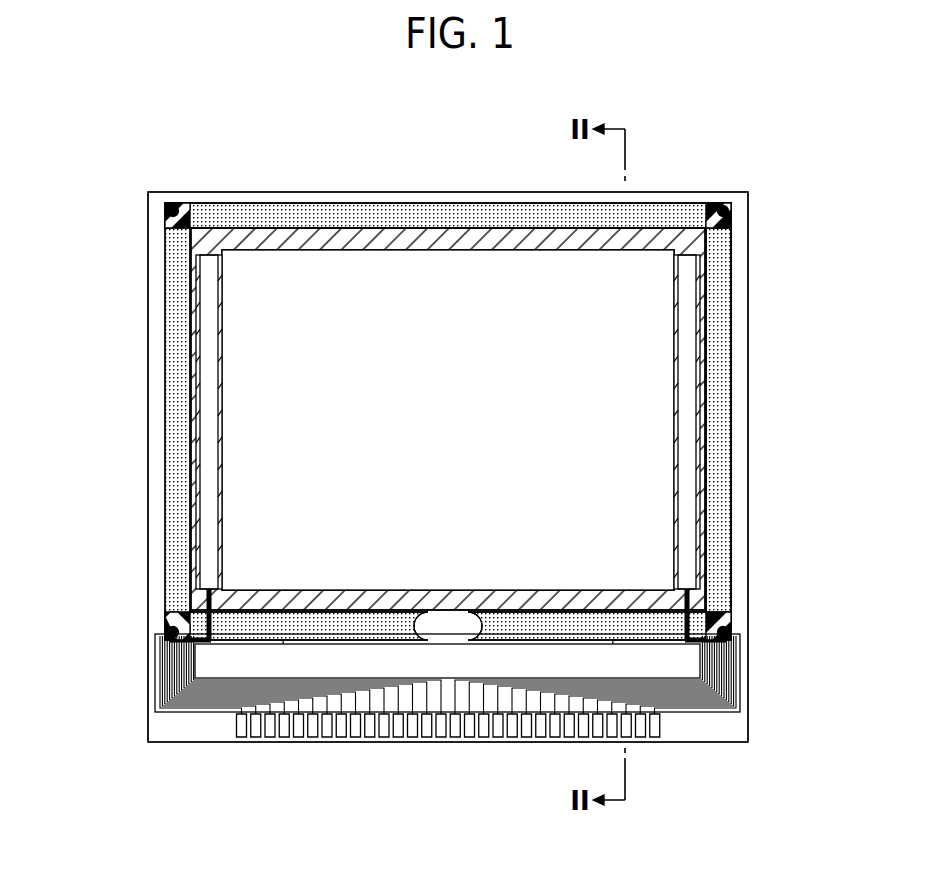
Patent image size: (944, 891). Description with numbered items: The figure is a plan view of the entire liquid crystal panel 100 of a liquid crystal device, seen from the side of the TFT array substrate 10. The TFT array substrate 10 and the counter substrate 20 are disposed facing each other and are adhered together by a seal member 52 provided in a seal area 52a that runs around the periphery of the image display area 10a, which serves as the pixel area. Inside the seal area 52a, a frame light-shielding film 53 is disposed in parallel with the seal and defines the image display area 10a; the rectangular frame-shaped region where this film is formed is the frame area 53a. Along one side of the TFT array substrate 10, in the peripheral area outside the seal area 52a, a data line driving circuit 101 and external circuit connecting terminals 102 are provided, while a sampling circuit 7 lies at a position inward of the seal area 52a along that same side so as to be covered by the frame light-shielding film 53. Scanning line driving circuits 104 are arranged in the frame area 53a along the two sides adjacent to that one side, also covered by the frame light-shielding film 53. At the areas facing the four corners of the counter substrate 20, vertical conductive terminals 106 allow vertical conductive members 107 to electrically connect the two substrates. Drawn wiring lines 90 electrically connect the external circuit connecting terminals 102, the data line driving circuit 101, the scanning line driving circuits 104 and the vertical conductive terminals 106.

The liquid crystal panel 100 is at (686, 130).
The TFT array substrate 10 is at (273, 201).
The image display area 10a is at (265, 418).
The counter substrate 20 is at (475, 203).
The seal member 52 is at (720, 352).
The seal area 52a is at (720, 302).
The sampling circuit 7 is at (300, 598).
The scanning line driving circuits 104 is at (212, 325).
The frame light-shielding film 53 is at (695, 593).
The frame area 53a is at (700, 606).
The vertical conductive terminals 106 is at (182, 206).
The vertical conductive members 107 is at (168, 632).
The drawn wiring lines 90 is at (162, 687).
The data line driving circuit 101 is at (218, 668).
The external circuit connecting terminals 102 is at (415, 740).